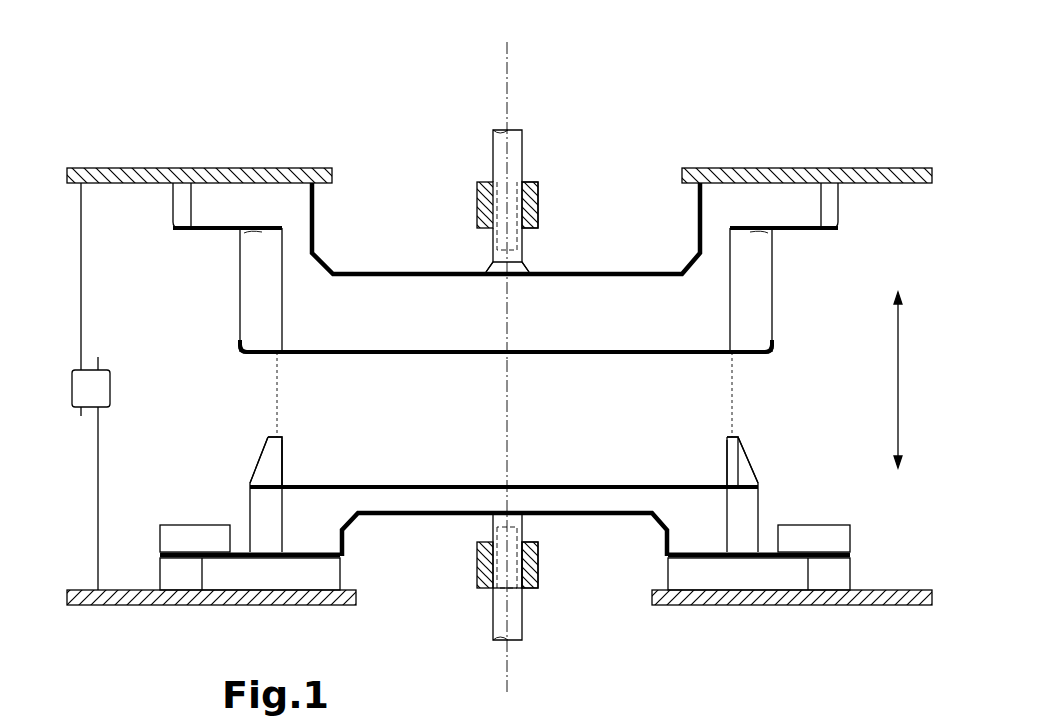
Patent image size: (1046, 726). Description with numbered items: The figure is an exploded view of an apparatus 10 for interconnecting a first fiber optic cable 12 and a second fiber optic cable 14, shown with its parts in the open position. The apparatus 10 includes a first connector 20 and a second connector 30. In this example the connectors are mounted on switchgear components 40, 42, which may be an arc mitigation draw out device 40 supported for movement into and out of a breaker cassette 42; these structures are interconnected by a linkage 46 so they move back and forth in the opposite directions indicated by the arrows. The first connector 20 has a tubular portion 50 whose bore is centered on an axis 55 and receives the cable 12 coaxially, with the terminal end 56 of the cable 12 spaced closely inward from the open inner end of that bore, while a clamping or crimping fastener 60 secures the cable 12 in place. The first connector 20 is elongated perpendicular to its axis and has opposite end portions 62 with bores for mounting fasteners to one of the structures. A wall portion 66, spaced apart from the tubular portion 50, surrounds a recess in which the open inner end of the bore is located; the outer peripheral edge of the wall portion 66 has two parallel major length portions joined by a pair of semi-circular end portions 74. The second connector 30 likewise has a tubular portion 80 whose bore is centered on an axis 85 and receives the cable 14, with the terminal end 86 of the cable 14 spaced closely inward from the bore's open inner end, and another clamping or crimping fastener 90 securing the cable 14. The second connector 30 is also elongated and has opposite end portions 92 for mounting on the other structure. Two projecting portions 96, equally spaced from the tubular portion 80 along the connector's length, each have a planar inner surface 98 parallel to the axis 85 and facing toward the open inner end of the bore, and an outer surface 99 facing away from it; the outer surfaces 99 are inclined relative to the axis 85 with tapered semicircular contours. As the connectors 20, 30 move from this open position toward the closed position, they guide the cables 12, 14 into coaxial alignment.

The apparatus 10 is at (256, 126).
The first fiber optic cable 12 is at (494, 160).
The second fiber optic cable 14 is at (494, 607).
The first connector 20 is at (237, 326).
The second connector 30 is at (247, 509).
The switchgear component 40 is at (112, 589).
The switchgear component 42 is at (112, 185).
The linkage 46 is at (91, 388).
The tubular portion 50 is at (524, 205).
The axis 55 is at (510, 105).
The terminal end 56 is at (490, 265).
The clamping or crimping fastener 60 is at (539, 217).
The end portions 62 is at (181, 210).
The wall portion 66 is at (448, 315).
The semi-circular end portions 74 is at (256, 356).
The tubular portion 80 is at (477, 565).
The axis 85 is at (507, 670).
The terminal end 86 is at (492, 510).
The clamping or crimping fastener 90 is at (540, 570).
The end portions 92 is at (158, 555).
The projecting portions 96 is at (284, 440).
The planar inner surface 98 is at (284, 462).
The outer surface 99 is at (270, 473).